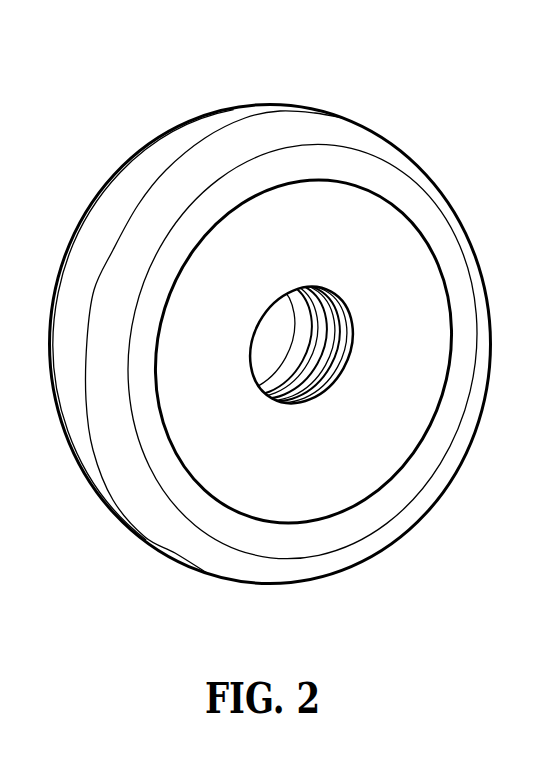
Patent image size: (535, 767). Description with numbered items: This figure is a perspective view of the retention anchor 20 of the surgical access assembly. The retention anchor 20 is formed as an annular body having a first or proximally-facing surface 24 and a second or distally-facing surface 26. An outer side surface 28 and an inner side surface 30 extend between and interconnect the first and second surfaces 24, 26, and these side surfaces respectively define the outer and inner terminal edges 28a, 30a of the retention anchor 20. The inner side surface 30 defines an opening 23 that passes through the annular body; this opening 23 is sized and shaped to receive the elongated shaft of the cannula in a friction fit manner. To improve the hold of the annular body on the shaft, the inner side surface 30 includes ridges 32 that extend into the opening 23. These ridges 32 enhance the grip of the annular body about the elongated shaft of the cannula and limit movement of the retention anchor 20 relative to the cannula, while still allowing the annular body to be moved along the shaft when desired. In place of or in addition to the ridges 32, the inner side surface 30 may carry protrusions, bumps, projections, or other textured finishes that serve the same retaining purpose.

The retention anchor 20 is at (169, 88).
The opening 23 is at (277, 323).
The first or proximally-facing surface 24 is at (405, 197).
The second or distally-facing surface 26 is at (118, 178).
The outer side surface 28 is at (88, 450).
The outer terminal edge 28a is at (113, 293).
The inner side surface 30 is at (332, 375).
The inner terminal edge 30a is at (282, 377).
The ridges 32 is at (353, 330).